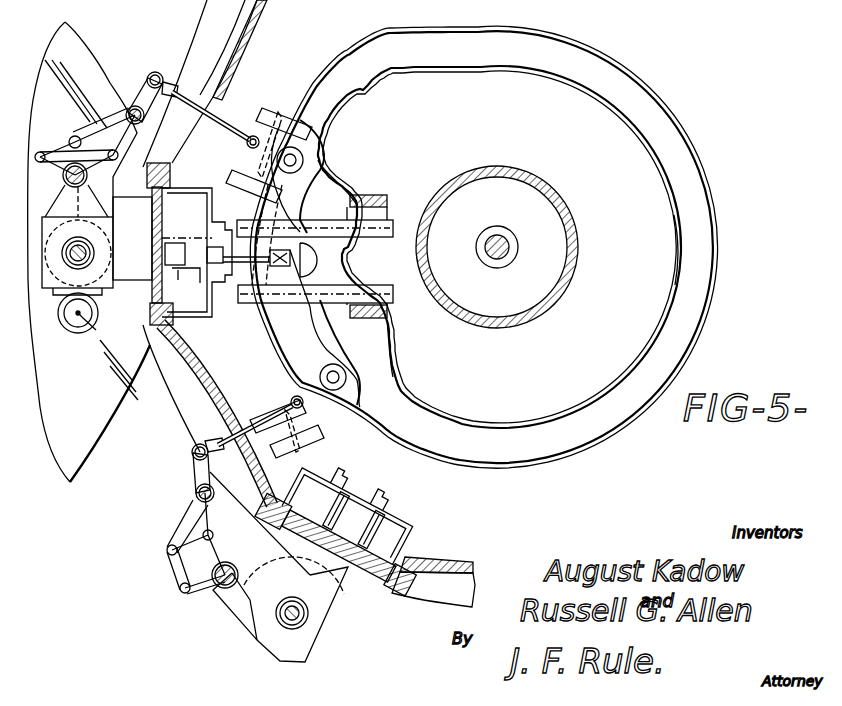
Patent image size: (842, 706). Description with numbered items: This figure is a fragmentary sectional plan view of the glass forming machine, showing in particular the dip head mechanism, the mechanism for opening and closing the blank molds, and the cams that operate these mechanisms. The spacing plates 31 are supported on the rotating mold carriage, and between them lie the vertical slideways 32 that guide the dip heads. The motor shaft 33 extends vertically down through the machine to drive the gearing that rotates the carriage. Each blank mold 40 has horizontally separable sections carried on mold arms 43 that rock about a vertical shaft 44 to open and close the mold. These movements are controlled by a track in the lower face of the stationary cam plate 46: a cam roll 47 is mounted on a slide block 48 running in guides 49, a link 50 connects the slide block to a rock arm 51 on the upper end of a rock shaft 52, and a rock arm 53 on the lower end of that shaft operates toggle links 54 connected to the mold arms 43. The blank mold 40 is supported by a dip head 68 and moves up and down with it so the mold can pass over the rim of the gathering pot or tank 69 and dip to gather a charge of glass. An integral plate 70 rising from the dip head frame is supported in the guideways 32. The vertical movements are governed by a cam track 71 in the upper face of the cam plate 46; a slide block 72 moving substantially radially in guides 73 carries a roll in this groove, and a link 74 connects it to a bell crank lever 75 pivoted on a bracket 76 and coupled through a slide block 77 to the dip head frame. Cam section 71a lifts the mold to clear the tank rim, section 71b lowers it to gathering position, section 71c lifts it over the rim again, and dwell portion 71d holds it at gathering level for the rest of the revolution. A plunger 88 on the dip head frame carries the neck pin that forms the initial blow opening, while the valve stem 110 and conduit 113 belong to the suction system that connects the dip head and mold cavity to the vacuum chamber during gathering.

The spacing plates 31 is at (232, 56).
The vertical slideways 32 is at (172, 180).
The motor shaft 33 is at (510, 244).
The blank mold 40 is at (110, 240).
The mold arms 43 is at (236, 604).
The vertical shaft 44 is at (66, 184).
The cam plate 46 is at (670, 187).
The cam roll 47 is at (322, 130).
The slide block 48 is at (255, 158).
The guides 49 is at (288, 114).
The link 50 is at (222, 118).
The rock arm 51 is at (140, 96).
The rock shaft 52 is at (145, 118).
The rock arm 53 is at (128, 116).
The toggle links 54 is at (70, 140).
The dip head 68 is at (150, 222).
The gathering pot or tank 69 is at (100, 75).
The plate 70 is at (152, 297).
The cam track 71 is at (706, 297).
The cam section 71a is at (392, 346).
The cam section 71b is at (310, 316).
The cam section 71c is at (362, 195).
The dwell portion 71d is at (676, 262).
The slide block 72 is at (340, 258).
The guides 73 is at (386, 285).
The link 74 is at (300, 240).
The bell crank lever 75 is at (202, 238).
The bracket 76 is at (213, 205).
The slide block 77 is at (178, 272).
The plunger 88 is at (96, 255).
The valve stem 110 is at (66, 327).
The conduit 113 is at (88, 333).